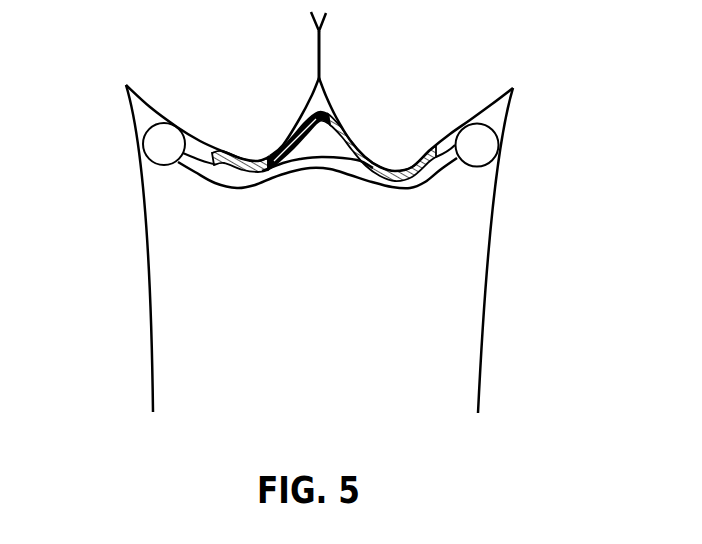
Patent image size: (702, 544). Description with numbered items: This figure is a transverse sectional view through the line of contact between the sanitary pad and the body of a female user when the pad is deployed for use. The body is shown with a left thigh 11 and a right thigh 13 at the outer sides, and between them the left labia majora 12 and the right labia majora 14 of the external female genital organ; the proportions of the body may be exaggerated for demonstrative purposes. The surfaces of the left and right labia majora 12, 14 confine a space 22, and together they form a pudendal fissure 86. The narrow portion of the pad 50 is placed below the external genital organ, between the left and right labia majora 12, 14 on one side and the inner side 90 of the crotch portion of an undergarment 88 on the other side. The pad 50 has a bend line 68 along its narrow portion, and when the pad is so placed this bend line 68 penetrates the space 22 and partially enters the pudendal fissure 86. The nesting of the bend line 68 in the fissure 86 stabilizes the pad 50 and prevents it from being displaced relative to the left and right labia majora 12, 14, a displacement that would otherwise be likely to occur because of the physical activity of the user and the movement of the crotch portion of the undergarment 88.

The left thigh 11 is at (573, 276).
The left labia majora 12 is at (420, 93).
The right thigh 13 is at (80, 276).
The right labia majora 14 is at (250, 93).
The space 22 is at (313, 95).
The pad 50 is at (386, 163).
The bend line 68 is at (318, 112).
The pudendal fissure 86 is at (322, 50).
The undergarment 88 is at (310, 170).
The inner side of crotch portion 90 is at (250, 158).